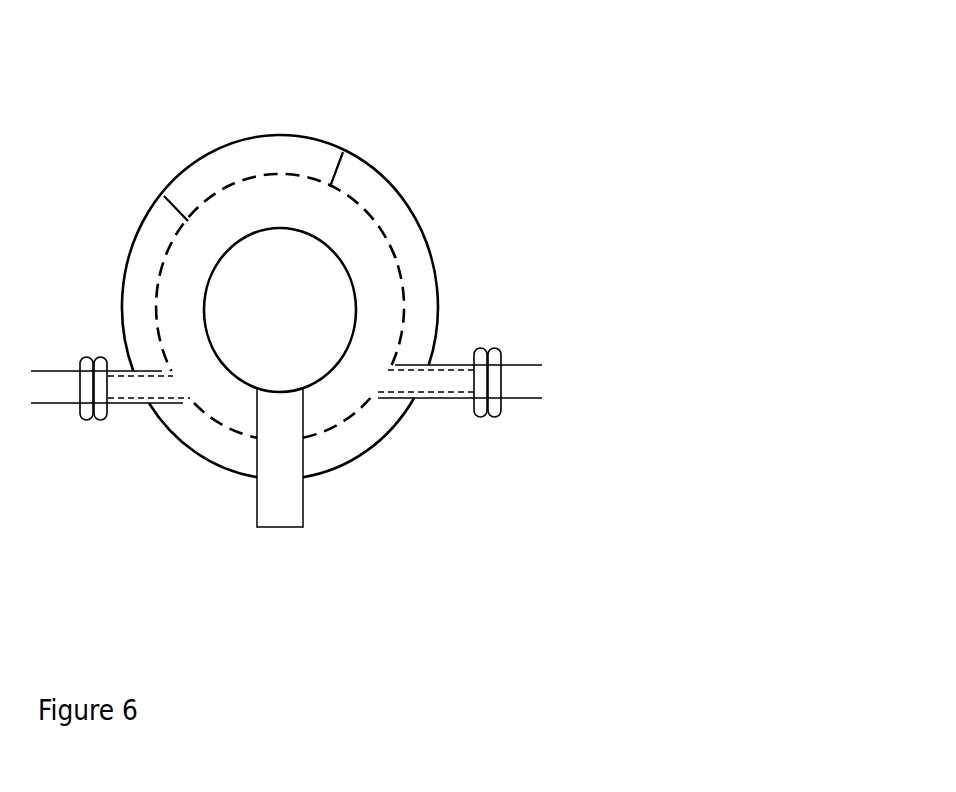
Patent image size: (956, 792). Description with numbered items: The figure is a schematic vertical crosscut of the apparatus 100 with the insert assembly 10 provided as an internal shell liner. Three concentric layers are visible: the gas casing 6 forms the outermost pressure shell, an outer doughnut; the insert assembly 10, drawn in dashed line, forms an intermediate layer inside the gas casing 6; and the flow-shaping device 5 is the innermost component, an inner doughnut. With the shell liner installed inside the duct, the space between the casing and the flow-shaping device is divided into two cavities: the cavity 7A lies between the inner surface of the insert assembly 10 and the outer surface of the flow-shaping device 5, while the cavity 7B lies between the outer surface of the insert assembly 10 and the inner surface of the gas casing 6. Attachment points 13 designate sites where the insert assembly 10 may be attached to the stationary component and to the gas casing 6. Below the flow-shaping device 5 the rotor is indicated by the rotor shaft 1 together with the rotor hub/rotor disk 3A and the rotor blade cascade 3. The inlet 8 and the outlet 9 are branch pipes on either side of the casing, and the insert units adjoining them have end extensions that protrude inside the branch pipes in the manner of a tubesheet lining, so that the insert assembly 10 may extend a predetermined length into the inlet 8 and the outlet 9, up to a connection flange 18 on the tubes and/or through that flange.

The apparatus 100 is at (642, 40).
The gas casing 6 is at (387, 181).
The attachment points 13 is at (330, 187).
The cavity 7B is at (150, 240).
The cavity 7A is at (175, 309).
The flow-shaping device 5 is at (228, 373).
The rotor shaft 1 is at (348, 471).
The rotor hub/rotor disk 3A is at (293, 492).
The rotor blade cascade 3 is at (348, 471).
The inlet 8 is at (60, 383).
The connection flange 18 is at (100, 410).
The outlet 9 is at (520, 380).
The insert assembly 10 is at (442, 367).